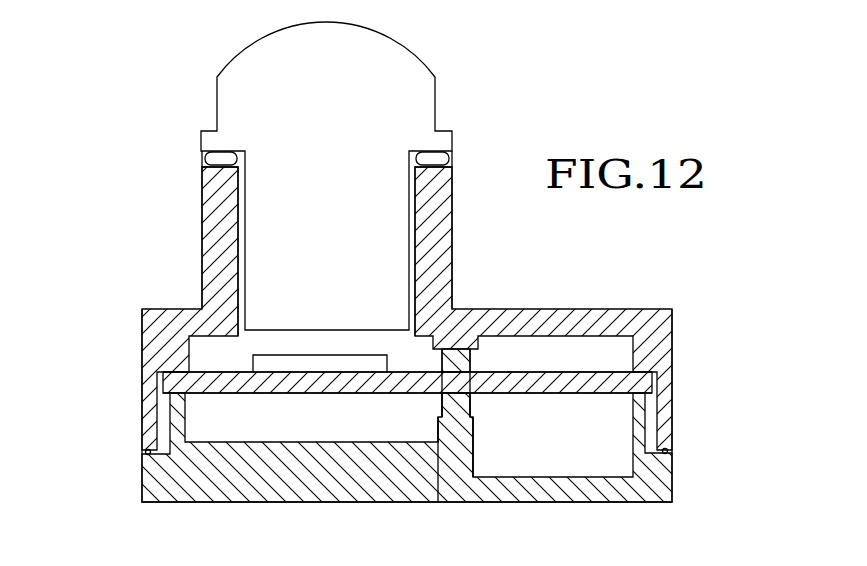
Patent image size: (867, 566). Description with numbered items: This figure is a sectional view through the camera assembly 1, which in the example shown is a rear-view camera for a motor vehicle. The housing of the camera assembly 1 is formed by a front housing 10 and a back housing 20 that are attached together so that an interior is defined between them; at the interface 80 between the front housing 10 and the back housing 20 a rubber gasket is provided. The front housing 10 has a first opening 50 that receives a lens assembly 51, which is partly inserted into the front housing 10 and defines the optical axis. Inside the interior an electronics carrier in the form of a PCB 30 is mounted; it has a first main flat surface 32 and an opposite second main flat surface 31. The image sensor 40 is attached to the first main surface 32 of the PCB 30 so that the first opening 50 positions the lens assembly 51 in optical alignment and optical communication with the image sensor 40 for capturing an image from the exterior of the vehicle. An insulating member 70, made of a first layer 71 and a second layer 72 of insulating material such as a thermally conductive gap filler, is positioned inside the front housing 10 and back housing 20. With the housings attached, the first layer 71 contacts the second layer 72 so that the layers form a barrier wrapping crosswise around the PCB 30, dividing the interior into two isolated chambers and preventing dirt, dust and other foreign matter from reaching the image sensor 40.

The camera assembly 1 is at (168, 158).
The front housing 10 is at (150, 359).
The back housing 20 is at (153, 487).
The printed circuit board 30 is at (577, 367).
The second main flat surface 31 is at (603, 395).
The first main flat surface 32 is at (617, 369).
The image sensor 40 is at (322, 362).
The first opening 50 is at (242, 230).
The lens assembly 51 is at (237, 71).
The insulating member 70 is at (426, 407).
The first layer 71 is at (468, 366).
The second layer 72 is at (470, 411).
The interface 80 is at (145, 451).